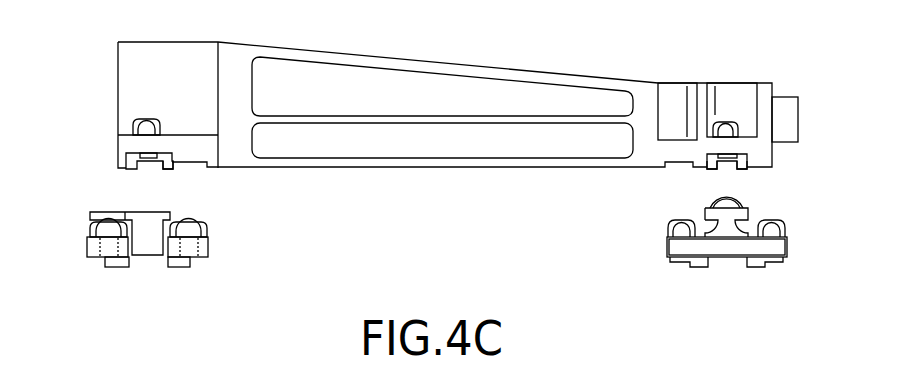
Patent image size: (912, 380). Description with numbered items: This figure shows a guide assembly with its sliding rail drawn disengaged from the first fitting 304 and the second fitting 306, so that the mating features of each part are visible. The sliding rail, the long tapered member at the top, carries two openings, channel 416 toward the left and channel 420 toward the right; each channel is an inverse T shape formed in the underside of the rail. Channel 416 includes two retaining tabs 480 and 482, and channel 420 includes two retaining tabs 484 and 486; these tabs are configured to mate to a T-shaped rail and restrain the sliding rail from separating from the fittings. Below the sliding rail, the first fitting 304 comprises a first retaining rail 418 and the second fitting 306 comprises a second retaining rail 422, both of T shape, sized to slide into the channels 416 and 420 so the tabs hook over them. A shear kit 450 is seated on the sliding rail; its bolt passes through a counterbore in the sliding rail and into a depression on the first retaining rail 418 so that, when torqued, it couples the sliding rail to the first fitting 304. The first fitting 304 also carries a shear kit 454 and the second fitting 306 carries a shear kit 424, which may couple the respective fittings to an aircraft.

The first fitting 304 is at (154, 280).
The second fitting 306 is at (763, 272).
The channel 416 is at (141, 172).
The first retaining rail 418 is at (92, 212).
The channel 420 is at (742, 189).
The second retaining rail 422 is at (752, 210).
The shear kit 424 is at (789, 238).
The shear kit 450 is at (135, 132).
The shear kit 454 is at (203, 226).
The retaining tab 480 is at (172, 168).
The retaining tab 482 is at (125, 168).
The retaining tab 484 is at (710, 170).
The retaining tab 486 is at (745, 169).